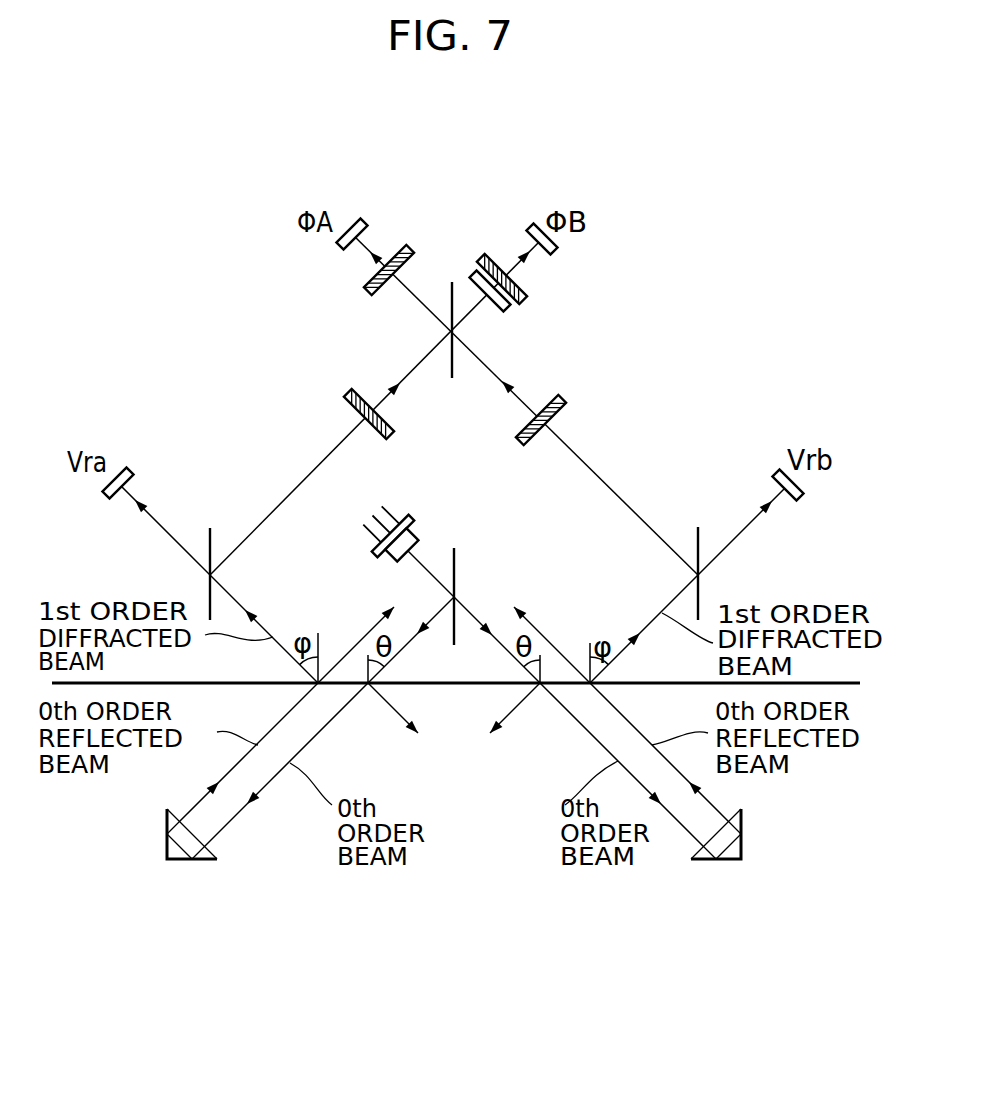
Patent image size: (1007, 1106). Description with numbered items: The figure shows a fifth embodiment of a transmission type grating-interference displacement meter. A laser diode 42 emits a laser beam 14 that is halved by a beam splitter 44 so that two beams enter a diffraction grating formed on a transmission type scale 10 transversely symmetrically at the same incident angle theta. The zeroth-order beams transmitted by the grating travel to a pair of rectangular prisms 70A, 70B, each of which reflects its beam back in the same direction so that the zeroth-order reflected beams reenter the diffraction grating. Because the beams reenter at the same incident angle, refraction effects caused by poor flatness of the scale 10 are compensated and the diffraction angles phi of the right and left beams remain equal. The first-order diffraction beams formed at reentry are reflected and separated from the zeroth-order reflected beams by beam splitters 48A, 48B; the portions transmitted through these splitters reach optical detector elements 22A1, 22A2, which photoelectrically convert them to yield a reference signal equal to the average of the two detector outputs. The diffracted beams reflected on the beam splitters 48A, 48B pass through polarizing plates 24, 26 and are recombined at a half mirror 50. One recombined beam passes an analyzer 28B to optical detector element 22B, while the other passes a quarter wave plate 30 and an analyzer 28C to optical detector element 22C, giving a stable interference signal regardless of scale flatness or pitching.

The transmission type scale 10 is at (653, 682).
The laser beam 14 is at (430, 575).
The laser diode 42 is at (410, 528).
The beam splitter 44 is at (458, 561).
The half mirror 50 is at (452, 373).
The polarizing plate 24 is at (345, 398).
The polarizing plate 26 is at (563, 407).
The analyzer 28B is at (372, 285).
The analyzer 28C is at (522, 290).
The quarter wave plate 30 is at (510, 308).
The optical detector element 22B is at (363, 223).
The optical detector element 22C is at (530, 225).
The optical detector element 22A1 is at (132, 482).
The optical detector element 22A2 is at (775, 478).
The beam splitter 48A is at (207, 590).
The beam splitter 48B is at (700, 593).
The rectangular prism 70A is at (177, 862).
The rectangular prism 70B is at (745, 837).